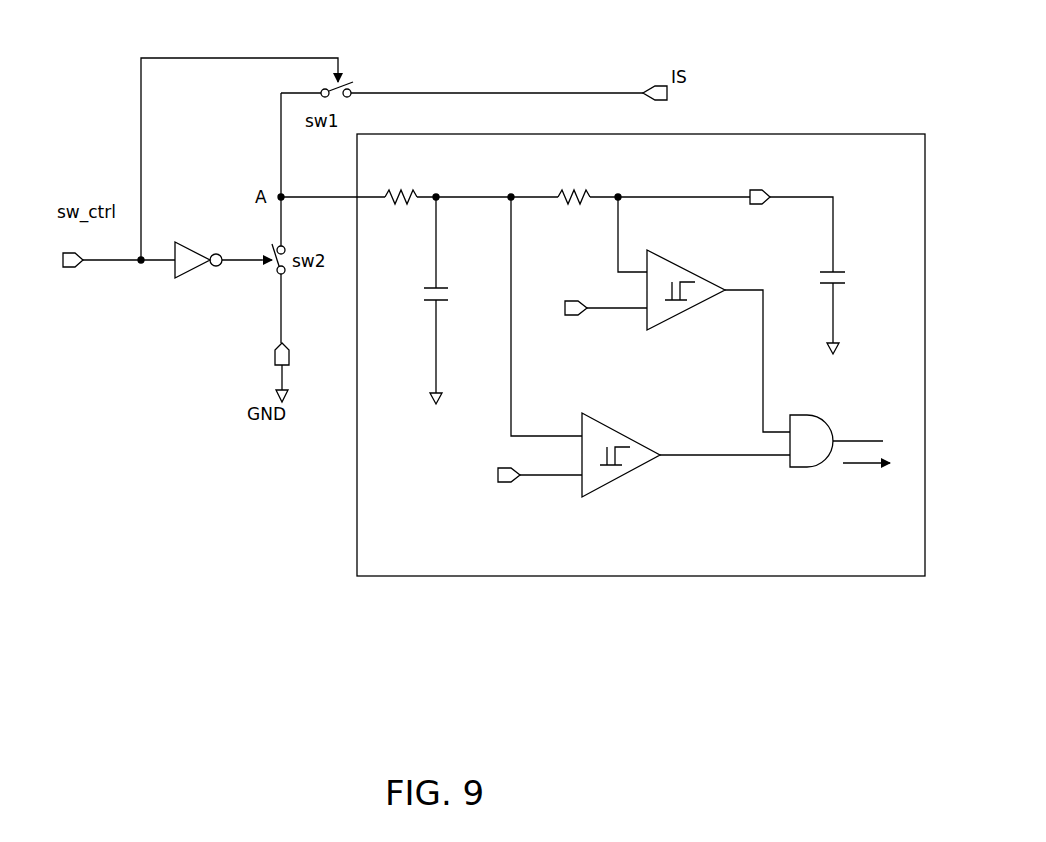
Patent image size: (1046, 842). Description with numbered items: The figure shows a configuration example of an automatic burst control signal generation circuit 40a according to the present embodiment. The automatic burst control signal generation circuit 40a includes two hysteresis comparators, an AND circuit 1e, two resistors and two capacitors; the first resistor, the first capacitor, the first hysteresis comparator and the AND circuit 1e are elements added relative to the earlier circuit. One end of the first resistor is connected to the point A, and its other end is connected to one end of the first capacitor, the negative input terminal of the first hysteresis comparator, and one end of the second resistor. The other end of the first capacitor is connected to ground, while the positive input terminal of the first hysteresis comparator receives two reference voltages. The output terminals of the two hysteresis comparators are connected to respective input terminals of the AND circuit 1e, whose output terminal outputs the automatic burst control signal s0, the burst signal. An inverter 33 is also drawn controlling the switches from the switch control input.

The inverter 33 is at (188, 241).
The automatic burst control signal generation circuit 40a is at (457, 577).
The AND circuit 1e is at (798, 413).
The automatic burst control signal s0 is at (863, 463).